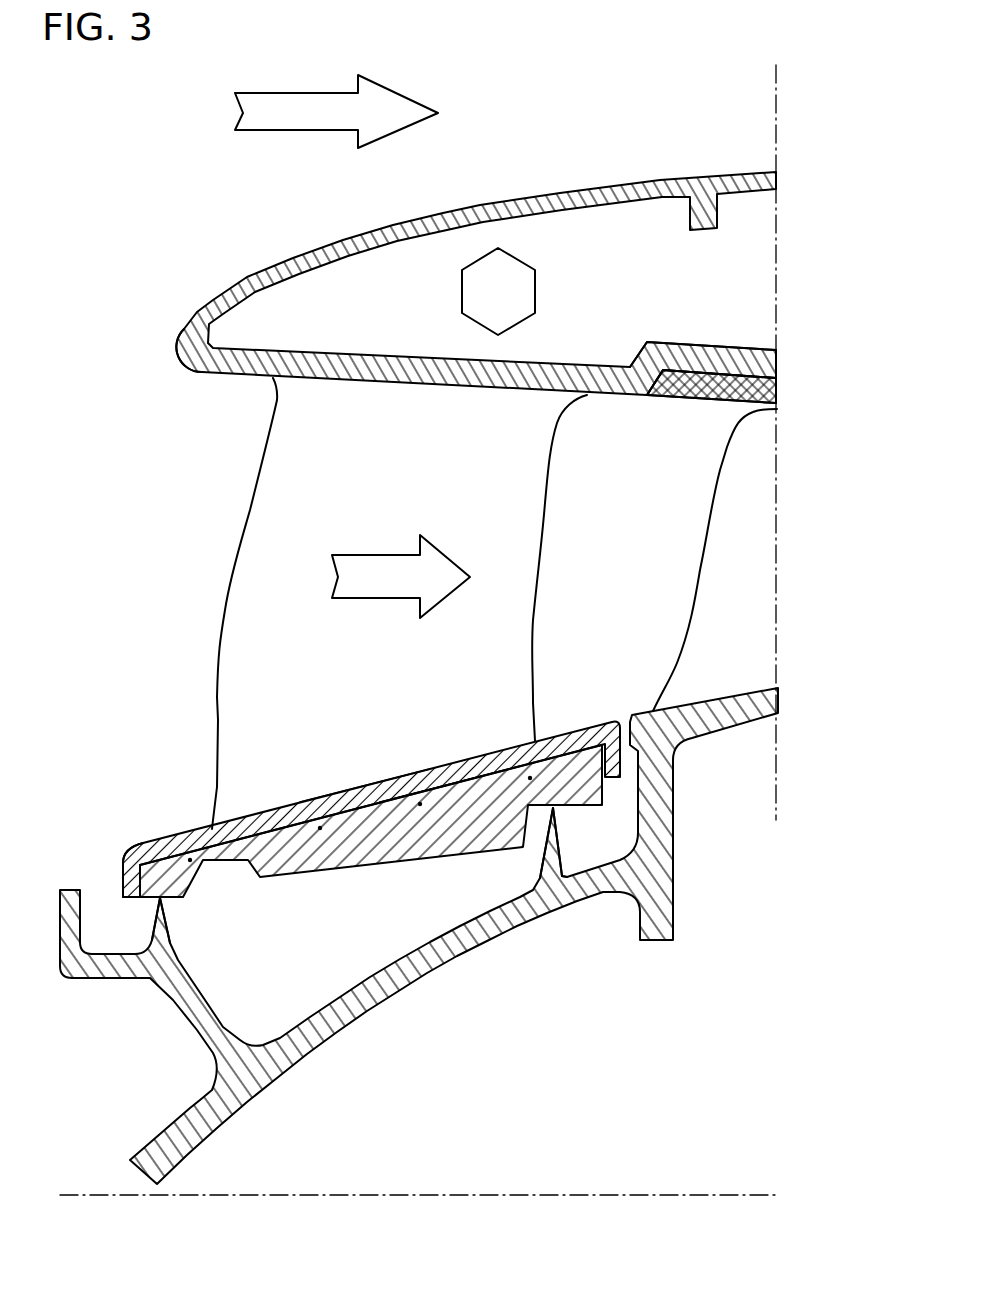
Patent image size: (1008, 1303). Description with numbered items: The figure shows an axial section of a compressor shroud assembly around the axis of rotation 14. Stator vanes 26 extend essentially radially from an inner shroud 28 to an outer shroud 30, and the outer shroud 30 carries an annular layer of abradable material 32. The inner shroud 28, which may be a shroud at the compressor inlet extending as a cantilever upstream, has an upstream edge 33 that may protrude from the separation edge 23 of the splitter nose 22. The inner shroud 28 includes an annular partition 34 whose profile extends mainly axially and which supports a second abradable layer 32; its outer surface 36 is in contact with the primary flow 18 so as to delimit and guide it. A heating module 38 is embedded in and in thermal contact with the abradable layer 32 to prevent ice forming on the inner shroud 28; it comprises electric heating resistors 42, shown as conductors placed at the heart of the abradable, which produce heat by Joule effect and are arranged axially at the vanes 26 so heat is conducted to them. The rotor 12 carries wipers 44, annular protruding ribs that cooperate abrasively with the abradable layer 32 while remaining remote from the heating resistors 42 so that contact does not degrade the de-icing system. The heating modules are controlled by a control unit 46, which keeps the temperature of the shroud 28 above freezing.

The rotor 12 is at (283, 1068).
The axis of rotation 14 is at (712, 1193).
The primary flow 18 is at (398, 590).
The splitter nose 22 is at (130, 228).
The separation edge 23 is at (176, 352).
The stator vanes 26 is at (398, 466).
The inner shroud 28 is at (577, 727).
The outer shroud 30 is at (727, 364).
The abradable layer 32 is at (670, 396).
The upstream edge 33 is at (118, 866).
The annular partition 34 is at (450, 766).
The outer surface 36 is at (352, 781).
The heating module 38 is at (183, 492).
The electric heating resistors 42 is at (190, 857).
The wipers 44 is at (164, 941).
The control unit 46 is at (485, 305).